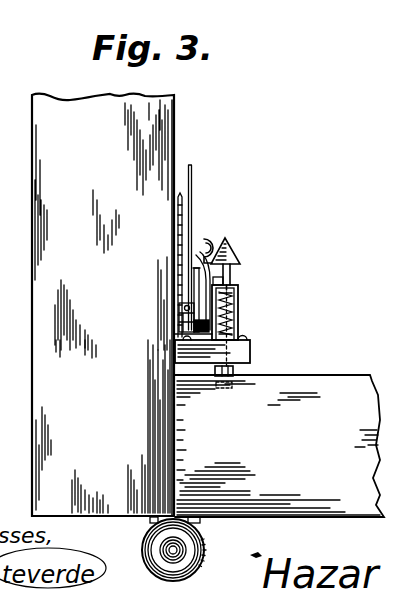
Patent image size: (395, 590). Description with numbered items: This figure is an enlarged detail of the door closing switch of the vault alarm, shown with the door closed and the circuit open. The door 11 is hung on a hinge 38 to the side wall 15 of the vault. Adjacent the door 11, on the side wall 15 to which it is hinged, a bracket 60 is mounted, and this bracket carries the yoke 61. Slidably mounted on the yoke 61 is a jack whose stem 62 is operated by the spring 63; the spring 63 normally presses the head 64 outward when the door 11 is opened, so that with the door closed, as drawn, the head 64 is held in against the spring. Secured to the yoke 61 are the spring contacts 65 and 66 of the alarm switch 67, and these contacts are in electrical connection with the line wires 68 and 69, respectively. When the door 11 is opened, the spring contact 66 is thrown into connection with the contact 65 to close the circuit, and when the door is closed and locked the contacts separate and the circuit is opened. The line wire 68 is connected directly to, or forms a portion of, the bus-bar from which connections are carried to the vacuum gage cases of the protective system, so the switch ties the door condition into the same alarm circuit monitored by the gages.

The side wall 15 is at (103, 305).
The door 11 is at (279, 446).
The hinge 38 is at (205, 548).
The line wire 68 is at (182, 213).
The line wire 69 is at (192, 180).
The spring contact 66 is at (213, 241).
The alarm switch 67 is at (232, 250).
The spring contact 65 is at (233, 266).
The stem 62 is at (215, 277).
The yoke 61 is at (240, 318).
The spring 63 is at (230, 303).
The bracket 60 is at (248, 353).
The head 64 is at (236, 374).